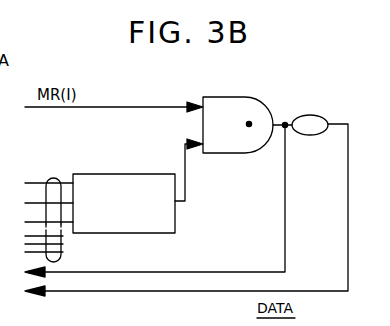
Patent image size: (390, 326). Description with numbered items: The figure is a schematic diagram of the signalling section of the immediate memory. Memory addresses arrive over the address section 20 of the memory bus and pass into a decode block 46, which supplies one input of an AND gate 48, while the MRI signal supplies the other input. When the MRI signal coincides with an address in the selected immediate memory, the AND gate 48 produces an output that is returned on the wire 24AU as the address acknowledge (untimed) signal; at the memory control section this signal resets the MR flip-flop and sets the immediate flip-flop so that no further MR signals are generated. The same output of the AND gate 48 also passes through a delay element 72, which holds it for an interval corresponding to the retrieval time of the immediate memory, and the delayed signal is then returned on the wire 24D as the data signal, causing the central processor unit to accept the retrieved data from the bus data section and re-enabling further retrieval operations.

The address section 20 is at (53, 178).
The decode circuit 46 is at (117, 174).
The AND gate 48 is at (232, 97).
The delay element 72 is at (312, 115).
The wire 24AU is at (283, 172).
The wire 24D is at (318, 291).